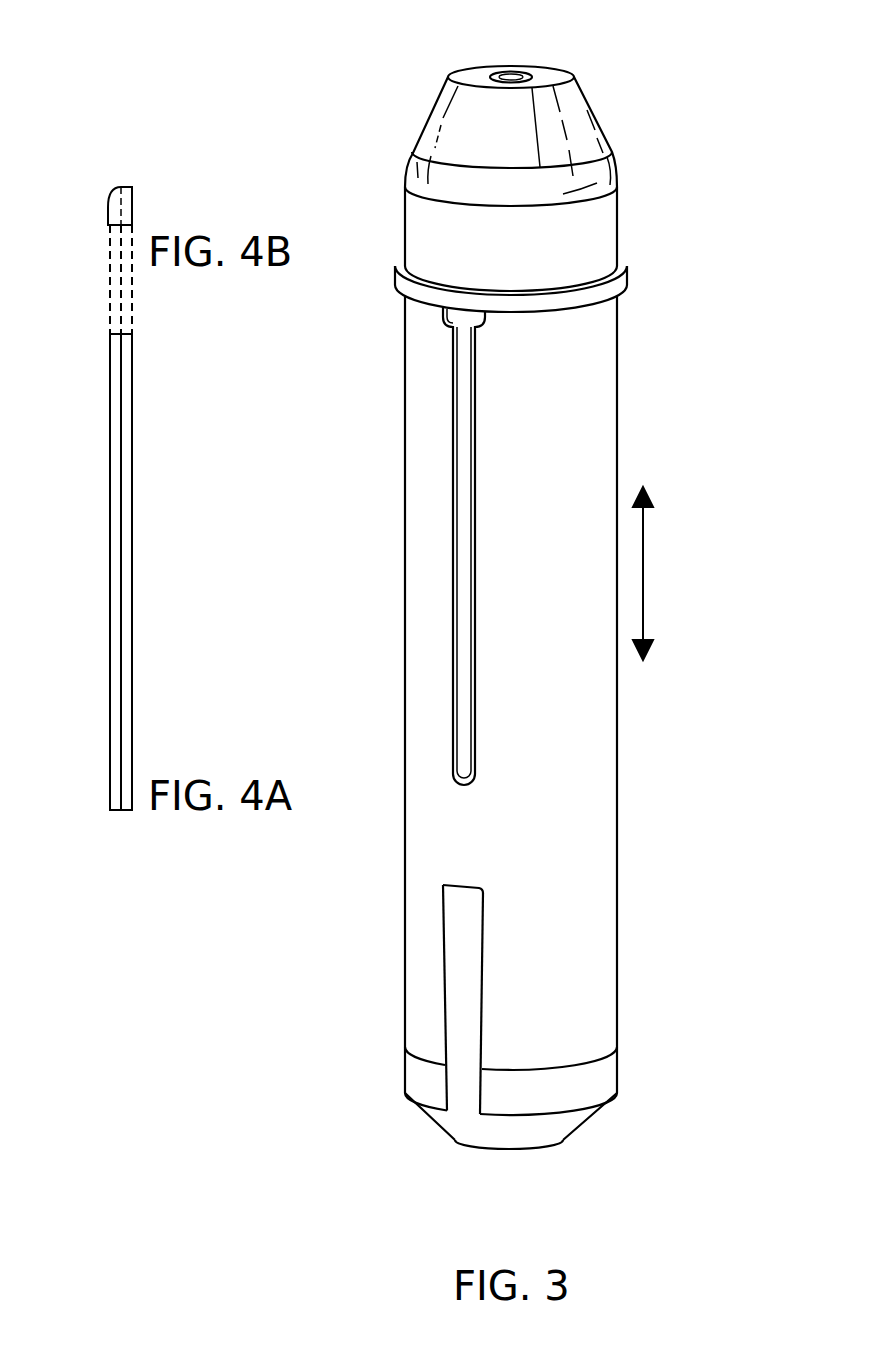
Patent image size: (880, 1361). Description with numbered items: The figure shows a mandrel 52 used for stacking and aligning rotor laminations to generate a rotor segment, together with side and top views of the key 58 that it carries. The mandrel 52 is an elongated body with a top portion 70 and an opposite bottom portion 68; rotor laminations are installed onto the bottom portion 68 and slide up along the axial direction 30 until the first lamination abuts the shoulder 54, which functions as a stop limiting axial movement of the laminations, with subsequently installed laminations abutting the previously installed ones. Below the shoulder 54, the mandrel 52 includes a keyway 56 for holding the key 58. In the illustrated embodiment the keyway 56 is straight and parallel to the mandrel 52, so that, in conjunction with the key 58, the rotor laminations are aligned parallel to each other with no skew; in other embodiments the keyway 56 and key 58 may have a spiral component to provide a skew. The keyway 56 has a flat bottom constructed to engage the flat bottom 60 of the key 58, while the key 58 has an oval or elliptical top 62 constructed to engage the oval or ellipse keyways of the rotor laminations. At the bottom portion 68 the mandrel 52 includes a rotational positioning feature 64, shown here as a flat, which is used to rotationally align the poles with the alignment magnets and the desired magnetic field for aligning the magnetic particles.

In FIG. 3, the axial direction of movement 30 is at (643, 567).
In FIG. 3, the mandrel 52 is at (651, 56).
In FIG. 3, the shoulder 54 is at (628, 278).
In FIG. 3, the keyway 56 is at (453, 508).
In FIG. 4A, the key 58 is at (128, 572).
In FIG. 4B, the key 58 is at (142, 232).
In FIG. 4A, the flat bottom 60 is at (132, 406).
In FIG. 4B, the flat bottom 60 is at (132, 207).
In FIG. 4A, the oval or elliptical top 62 is at (108, 748).
In FIG. 4B, the oval or elliptical top 62 is at (108, 207).
In FIG. 3, the rotational positioning feature 64 is at (443, 983).
In FIG. 3, the bottom portion 68 is at (672, 1026).
In FIG. 3, the top portion 70 is at (384, 180).